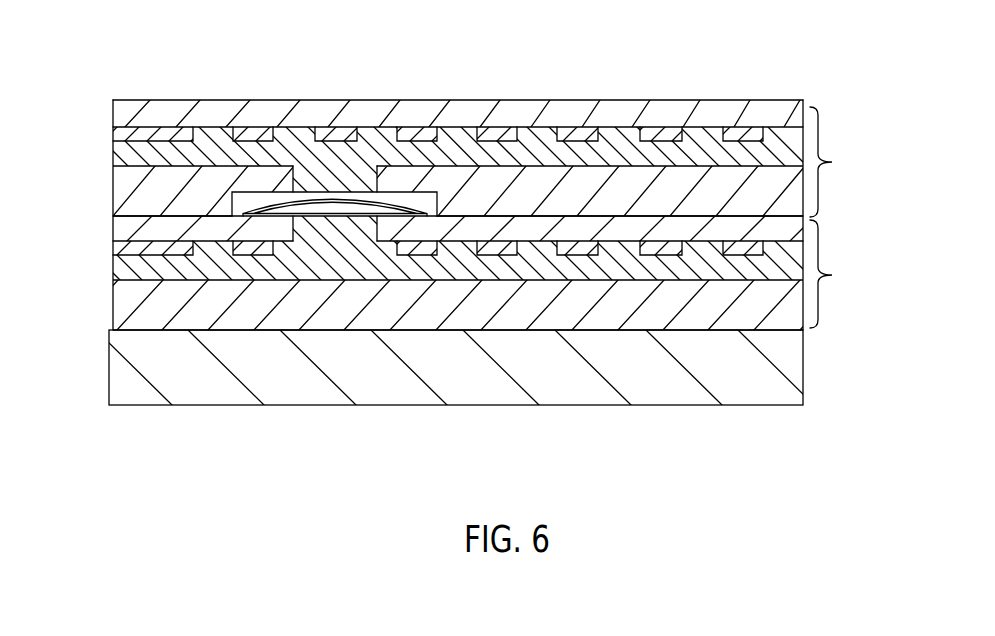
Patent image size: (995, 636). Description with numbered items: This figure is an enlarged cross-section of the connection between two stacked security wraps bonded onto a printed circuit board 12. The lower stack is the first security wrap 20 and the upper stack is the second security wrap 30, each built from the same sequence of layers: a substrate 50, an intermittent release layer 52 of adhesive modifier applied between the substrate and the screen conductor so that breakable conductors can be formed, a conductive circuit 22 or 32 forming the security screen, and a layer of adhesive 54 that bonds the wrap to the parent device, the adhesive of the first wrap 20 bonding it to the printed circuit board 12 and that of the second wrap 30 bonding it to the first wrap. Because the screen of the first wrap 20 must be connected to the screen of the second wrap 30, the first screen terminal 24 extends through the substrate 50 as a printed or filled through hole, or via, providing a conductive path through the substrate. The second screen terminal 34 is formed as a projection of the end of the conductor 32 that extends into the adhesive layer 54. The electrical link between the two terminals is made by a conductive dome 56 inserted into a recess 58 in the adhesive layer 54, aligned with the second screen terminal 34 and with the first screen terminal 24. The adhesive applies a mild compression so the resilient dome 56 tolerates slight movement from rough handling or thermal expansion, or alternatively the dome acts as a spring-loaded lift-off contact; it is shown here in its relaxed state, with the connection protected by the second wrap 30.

The printed circuit board 12 is at (792, 364).
The first security wrap 20 is at (836, 274).
The conductive circuit 22 is at (126, 268).
The first screen terminal 24 is at (338, 230).
The second security wrap 30 is at (836, 162).
The conductive circuit 32 is at (122, 154).
The second screen terminal 34 is at (333, 177).
The substrate 50 is at (120, 113).
The release layer 52 is at (120, 134).
The adhesive layer 54 is at (125, 185).
The conductive dome 56 is at (368, 195).
The recess 58 is at (249, 197).